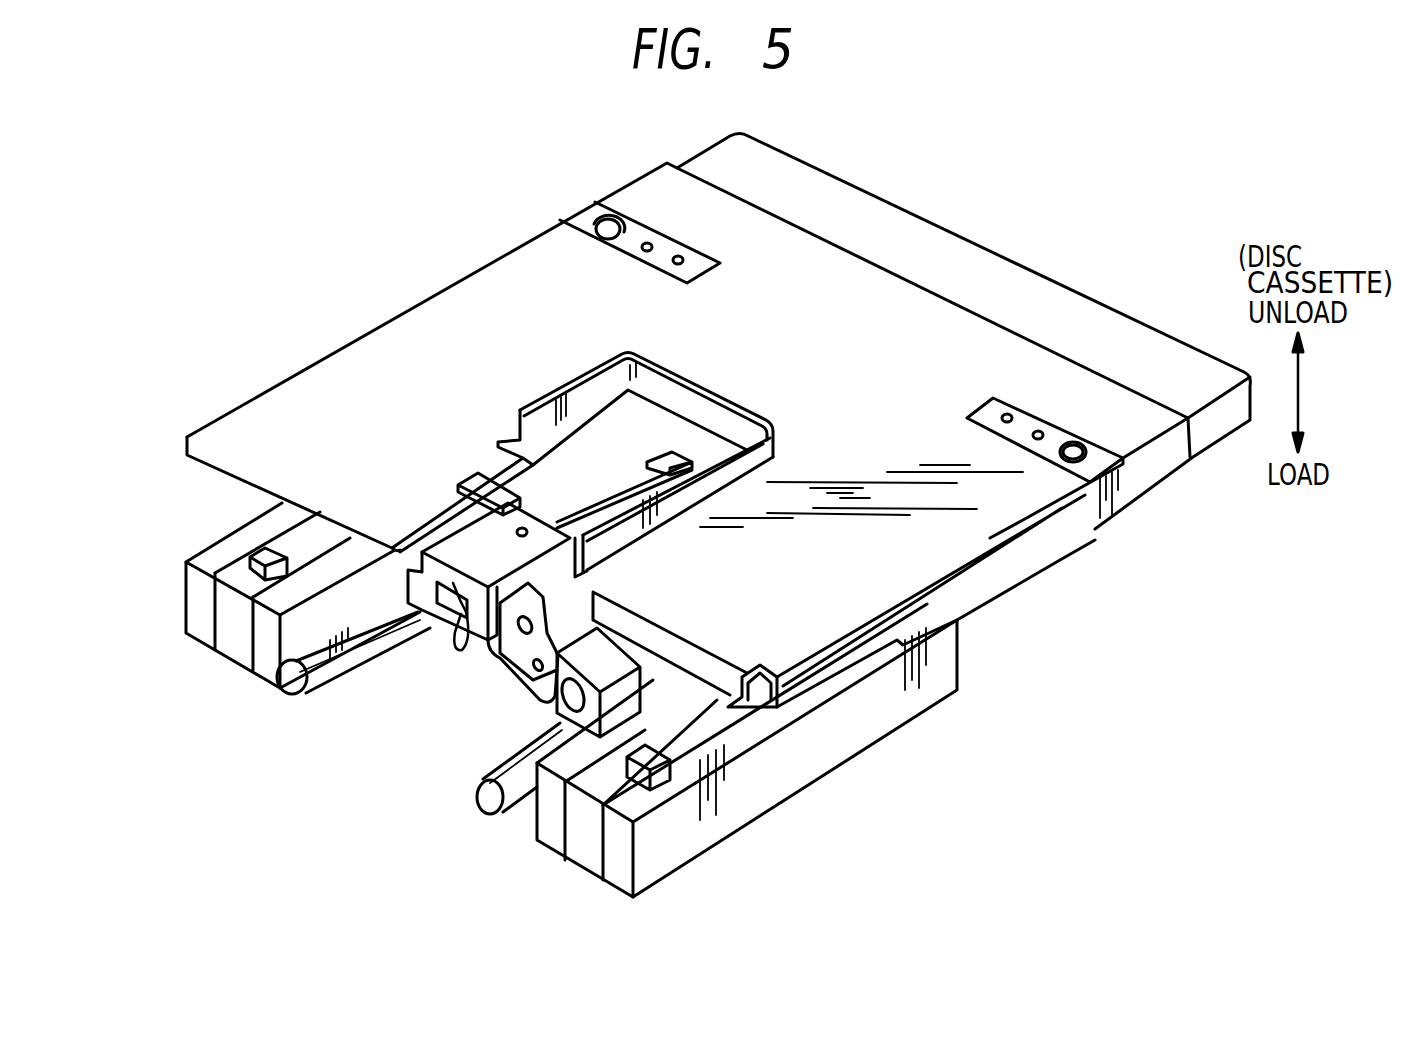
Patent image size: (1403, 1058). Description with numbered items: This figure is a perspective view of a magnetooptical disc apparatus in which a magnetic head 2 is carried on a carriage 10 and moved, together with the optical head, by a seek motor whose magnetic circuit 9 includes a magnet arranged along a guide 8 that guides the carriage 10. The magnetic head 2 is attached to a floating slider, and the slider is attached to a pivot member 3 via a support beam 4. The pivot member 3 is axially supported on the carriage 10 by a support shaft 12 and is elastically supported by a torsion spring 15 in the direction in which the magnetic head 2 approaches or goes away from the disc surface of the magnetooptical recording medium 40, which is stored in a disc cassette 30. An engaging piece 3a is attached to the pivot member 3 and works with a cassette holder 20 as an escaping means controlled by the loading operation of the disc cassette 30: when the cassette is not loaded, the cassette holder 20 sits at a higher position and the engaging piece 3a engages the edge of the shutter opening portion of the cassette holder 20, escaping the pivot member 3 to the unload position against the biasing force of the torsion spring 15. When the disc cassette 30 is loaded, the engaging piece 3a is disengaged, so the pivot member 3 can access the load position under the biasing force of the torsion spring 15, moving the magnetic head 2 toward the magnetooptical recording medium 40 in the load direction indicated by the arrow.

The magnetic head 2 is at (673, 460).
The pivot member 3 is at (467, 553).
The engaging piece 3a is at (480, 477).
The support beam 4 is at (590, 512).
The guide 8 is at (292, 687).
The magnetic circuit 9 is at (237, 650).
The carriage 10 is at (557, 715).
The support shaft 12 is at (517, 670).
The torsion spring 15 is at (447, 620).
The cassette holder 20 is at (970, 537).
The disc cassette 30 is at (945, 236).
The magnetooptical recording medium 40 is at (650, 427).